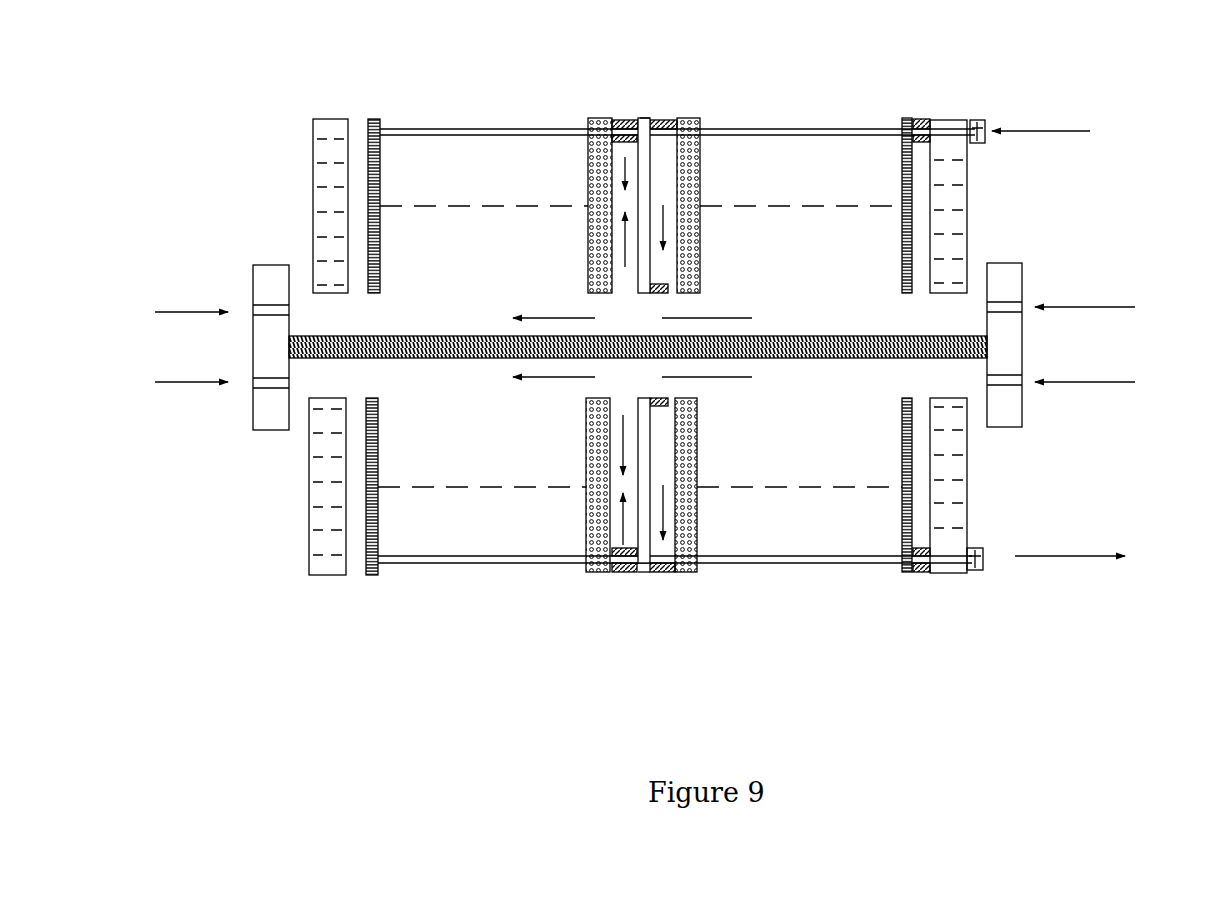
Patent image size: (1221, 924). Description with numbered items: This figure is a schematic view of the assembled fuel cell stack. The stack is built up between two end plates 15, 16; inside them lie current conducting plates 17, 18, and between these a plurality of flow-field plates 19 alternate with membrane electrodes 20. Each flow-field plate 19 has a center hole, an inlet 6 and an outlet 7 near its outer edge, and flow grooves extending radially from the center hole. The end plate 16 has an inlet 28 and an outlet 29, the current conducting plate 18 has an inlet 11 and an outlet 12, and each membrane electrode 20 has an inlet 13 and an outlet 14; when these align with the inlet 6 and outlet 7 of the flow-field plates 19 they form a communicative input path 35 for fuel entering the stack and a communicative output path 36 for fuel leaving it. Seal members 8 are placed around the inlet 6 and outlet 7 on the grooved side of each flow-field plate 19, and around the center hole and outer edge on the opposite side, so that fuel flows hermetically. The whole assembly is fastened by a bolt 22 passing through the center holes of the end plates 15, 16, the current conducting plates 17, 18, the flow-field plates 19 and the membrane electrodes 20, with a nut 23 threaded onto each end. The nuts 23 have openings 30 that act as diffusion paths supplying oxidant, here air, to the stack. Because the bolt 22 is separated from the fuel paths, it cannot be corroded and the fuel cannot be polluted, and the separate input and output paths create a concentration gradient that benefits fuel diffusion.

The inlet 6 is at (695, 130).
The outlet 7 is at (690, 572).
The seal member 8 is at (625, 116).
The inlet 11 is at (905, 117).
The outlet 12 is at (905, 575).
The inlet 13 is at (660, 116).
The outlet 14 is at (640, 575).
The end plate 15 is at (330, 117).
The end plate 16 is at (950, 115).
The current conducting plate 17 is at (374, 117).
The current conducting plate 18 is at (910, 118).
The flow-field plate 19 is at (597, 114).
The membrane electrode 20 is at (645, 116).
The bolt 22 is at (338, 360).
The nut 23 is at (262, 292).
The inlet 28 is at (985, 128).
The outlet 29 is at (983, 562).
The opening 30 is at (253, 382).
The input path 35 is at (795, 131).
The output path 36 is at (780, 566).